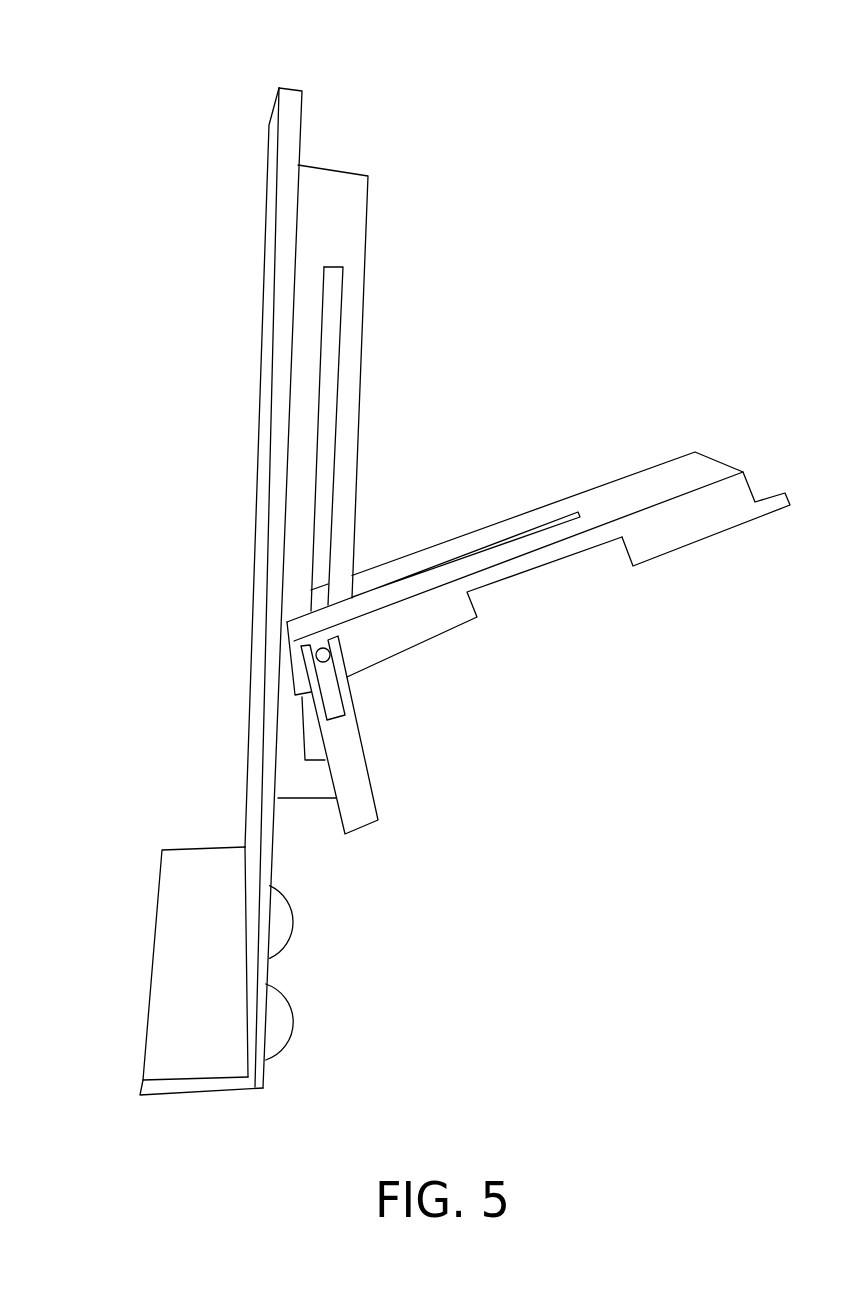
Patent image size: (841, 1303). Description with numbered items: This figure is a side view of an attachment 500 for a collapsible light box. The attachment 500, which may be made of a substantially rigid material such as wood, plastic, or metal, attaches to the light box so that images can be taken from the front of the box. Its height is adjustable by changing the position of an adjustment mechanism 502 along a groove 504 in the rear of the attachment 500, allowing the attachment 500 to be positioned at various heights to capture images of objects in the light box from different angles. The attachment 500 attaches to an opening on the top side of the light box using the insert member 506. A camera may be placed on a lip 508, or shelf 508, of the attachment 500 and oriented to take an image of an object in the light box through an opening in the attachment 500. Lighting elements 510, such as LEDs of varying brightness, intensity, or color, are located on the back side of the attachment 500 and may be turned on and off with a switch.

The attachment 500 is at (112, 62).
The adjustment mechanism 502 is at (336, 654).
The groove 504 is at (330, 367).
The insert member 506 is at (660, 537).
The lip 508 is at (162, 1047).
The lighting elements 510 is at (300, 1003).